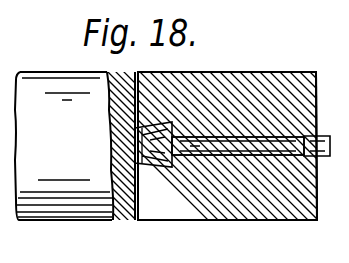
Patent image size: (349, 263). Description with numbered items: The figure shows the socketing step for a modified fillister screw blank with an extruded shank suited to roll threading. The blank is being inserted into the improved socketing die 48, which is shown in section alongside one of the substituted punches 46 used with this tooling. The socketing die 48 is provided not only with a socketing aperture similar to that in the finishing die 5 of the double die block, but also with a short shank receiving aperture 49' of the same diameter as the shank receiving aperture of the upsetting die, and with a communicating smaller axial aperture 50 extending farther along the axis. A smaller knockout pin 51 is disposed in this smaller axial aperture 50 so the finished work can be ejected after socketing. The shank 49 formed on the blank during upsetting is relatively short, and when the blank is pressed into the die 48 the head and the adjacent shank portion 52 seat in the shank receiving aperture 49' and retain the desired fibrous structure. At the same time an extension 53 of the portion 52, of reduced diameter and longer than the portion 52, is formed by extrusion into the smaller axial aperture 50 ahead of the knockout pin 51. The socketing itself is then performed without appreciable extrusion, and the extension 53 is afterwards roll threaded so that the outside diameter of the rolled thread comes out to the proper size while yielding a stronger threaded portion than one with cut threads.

The punch 46 is at (113, 73).
The socketing die 48 is at (254, 90).
The finishing die 5 is at (180, 74).
The shank 49 is at (238, 95).
The short shank receiving aperture 49' is at (238, 91).
The smaller axial aperture 50 is at (302, 73).
The knockout pin 51 is at (325, 136).
The adjacent shank portion 52 is at (205, 148).
The extension of reduced diameter 53 is at (277, 150).